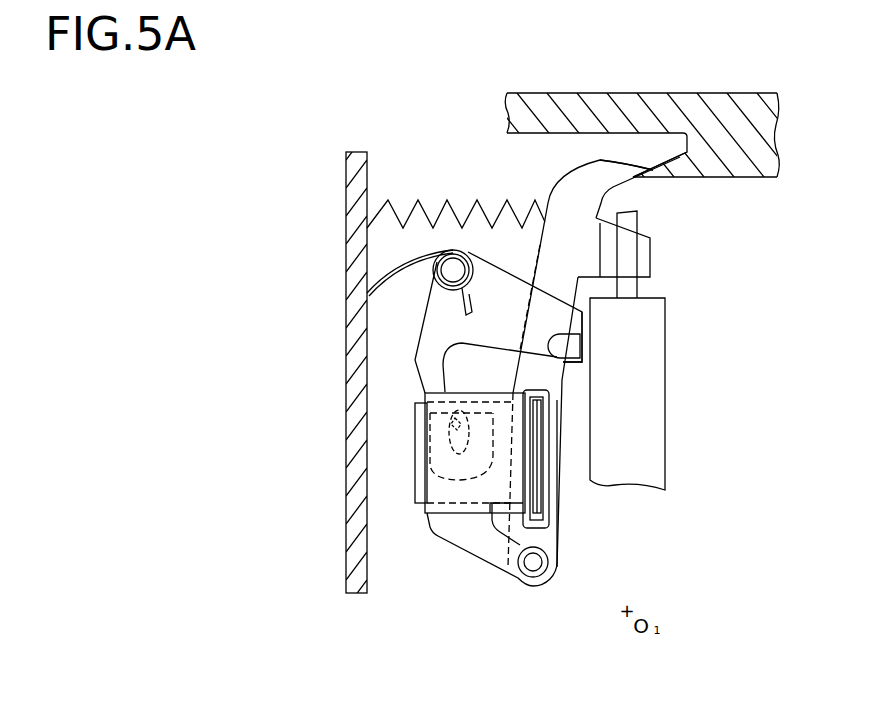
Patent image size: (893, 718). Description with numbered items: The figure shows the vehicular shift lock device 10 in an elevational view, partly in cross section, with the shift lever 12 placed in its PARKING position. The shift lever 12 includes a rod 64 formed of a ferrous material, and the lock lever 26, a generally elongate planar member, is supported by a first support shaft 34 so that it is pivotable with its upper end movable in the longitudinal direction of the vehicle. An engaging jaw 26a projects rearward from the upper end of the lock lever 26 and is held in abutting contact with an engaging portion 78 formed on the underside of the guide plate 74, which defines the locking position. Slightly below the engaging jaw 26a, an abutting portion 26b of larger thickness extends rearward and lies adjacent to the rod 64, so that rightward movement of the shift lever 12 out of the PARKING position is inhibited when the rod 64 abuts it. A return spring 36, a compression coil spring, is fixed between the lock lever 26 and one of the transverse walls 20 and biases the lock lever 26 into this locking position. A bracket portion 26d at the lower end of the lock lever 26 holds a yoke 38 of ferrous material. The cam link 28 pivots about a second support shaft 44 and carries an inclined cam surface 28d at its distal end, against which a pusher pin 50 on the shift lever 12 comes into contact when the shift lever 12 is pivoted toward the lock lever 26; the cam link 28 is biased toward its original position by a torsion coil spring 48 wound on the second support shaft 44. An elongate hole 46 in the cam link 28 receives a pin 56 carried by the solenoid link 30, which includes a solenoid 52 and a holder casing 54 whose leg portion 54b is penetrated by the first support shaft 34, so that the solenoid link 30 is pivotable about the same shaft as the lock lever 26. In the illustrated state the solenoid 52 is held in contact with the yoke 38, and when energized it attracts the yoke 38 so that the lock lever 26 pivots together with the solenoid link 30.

The vehicular shift lock device 10 is at (411, 78).
The shift lever 12 is at (679, 462).
The transverse walls 20 is at (352, 548).
The lock lever 26 is at (542, 193).
The engaging jaw 26a is at (640, 174).
The abutting portion 26b is at (643, 262).
The bracket portion 26d is at (548, 462).
The cam link 28 is at (403, 348).
The cam surface 28d is at (567, 318).
The solenoid link 30 is at (428, 565).
The first support shaft 34 is at (531, 562).
The return spring 36 is at (408, 206).
The yoke 38 is at (538, 508).
The second support shaft 44 is at (452, 268).
The elongate hole 46 is at (455, 412).
The torsion coil spring 48 is at (413, 260).
The pusher pin 50 is at (577, 346).
The solenoid 52 is at (418, 487).
The holder casing 54 is at (411, 464).
The leg portion 54b is at (482, 537).
The pin 56 is at (455, 432).
The rod 64 is at (628, 227).
The guide plate 74 is at (717, 122).
The engaging portion 78 is at (672, 170).